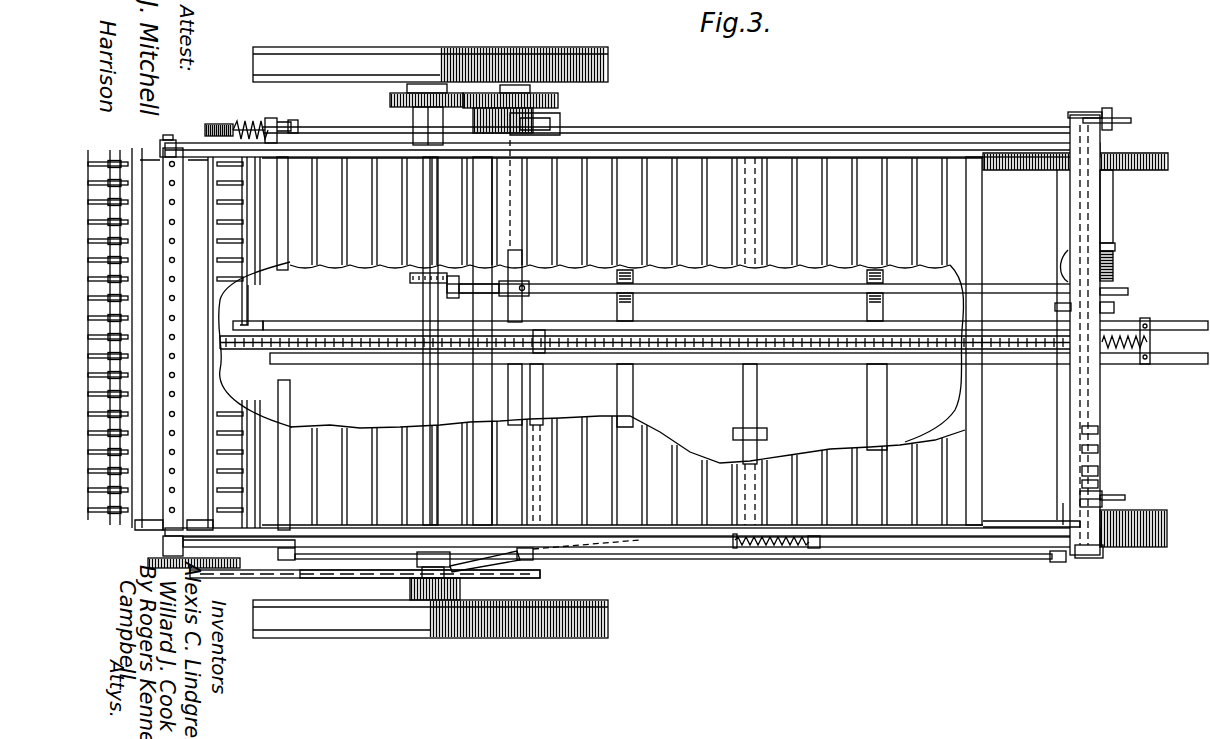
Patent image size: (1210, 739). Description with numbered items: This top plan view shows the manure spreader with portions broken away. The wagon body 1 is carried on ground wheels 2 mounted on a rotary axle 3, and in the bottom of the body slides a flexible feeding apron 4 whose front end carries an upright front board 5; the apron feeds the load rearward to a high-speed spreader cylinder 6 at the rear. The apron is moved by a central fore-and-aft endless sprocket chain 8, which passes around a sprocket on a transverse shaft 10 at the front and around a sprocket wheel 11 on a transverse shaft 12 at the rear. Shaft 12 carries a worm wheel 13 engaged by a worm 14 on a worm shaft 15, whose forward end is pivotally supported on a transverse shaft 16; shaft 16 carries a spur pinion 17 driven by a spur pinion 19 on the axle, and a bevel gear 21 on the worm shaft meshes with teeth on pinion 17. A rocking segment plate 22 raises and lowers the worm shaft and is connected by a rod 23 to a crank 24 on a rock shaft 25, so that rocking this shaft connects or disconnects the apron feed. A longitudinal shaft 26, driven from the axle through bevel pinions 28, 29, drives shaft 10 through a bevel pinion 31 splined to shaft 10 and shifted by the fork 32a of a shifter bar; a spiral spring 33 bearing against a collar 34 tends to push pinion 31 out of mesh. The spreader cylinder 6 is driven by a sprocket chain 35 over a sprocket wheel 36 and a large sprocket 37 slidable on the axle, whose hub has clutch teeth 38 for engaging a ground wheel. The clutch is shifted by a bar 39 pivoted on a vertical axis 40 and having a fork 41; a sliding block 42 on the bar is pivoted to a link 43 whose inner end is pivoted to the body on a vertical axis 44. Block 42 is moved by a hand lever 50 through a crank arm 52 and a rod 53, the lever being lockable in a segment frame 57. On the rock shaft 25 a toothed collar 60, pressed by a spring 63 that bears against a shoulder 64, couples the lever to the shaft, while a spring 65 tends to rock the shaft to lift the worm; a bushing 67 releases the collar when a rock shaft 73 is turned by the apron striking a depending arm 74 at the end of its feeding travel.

The wagon body 1 is at (692, 536).
The ground wheels 2 is at (548, 68).
The rotary axle 3 is at (426, 398).
The flexible feeding apron 4 is at (866, 252).
The upright front board 5 is at (974, 201).
The spreader cylinder 6 is at (147, 183).
The endless sprocket chain 8 is at (322, 340).
The transverse horizontal shaft 10 is at (1105, 216).
The sprocket wheel 11 is at (236, 357).
The horizontal transverse shaft 12 is at (240, 282).
The worm wheel 13 is at (215, 125).
The worm 14 is at (250, 122).
The worm shaft 15 is at (343, 129).
The horizontal transverse shaft 16 is at (540, 136).
The spur pinion 17 is at (491, 100).
The spur pinion 19 is at (400, 93).
The bevel gear 21 is at (483, 94).
The rocking segment plate 22 is at (300, 126).
The rod 23 is at (726, 128).
The crank 24 is at (1119, 107).
The transverse horizontal rock shaft 25 is at (1090, 210).
The longitudinally extending shaft 26 is at (714, 290).
The bevel pinion 28 is at (410, 278).
The bevel pinion 29 is at (445, 290).
The bevel pinion 31 is at (1130, 293).
The fork 32a is at (1120, 312).
The spiral spring 33 is at (1115, 266).
The collar 34 is at (1113, 245).
The sprocket chain 35 is at (335, 580).
The sprocket wheel 36 is at (233, 578).
The large sprocket 37 is at (500, 580).
The clutch teeth 38 is at (444, 576).
The horizontal bar 39 is at (560, 550).
The vertical axis 40 is at (630, 548).
The fork 41 is at (440, 570).
The sliding block 42 is at (534, 561).
The horizontal link 43 is at (545, 402).
The pivot 44 is at (541, 357).
The manually-operated lever 50 is at (1080, 496).
The crank arm 52 is at (1093, 554).
The rod 53 is at (895, 562).
The segment frame 57 is at (1122, 497).
The collar 60 is at (1105, 472).
The spring 63 is at (1105, 449).
The shoulder 64 is at (1105, 430).
The spring 65 is at (1115, 348).
The bushing 67 is at (1105, 486).
The horizontal transverse rock shaft 73 is at (762, 392).
The depending arm 74 is at (761, 426).